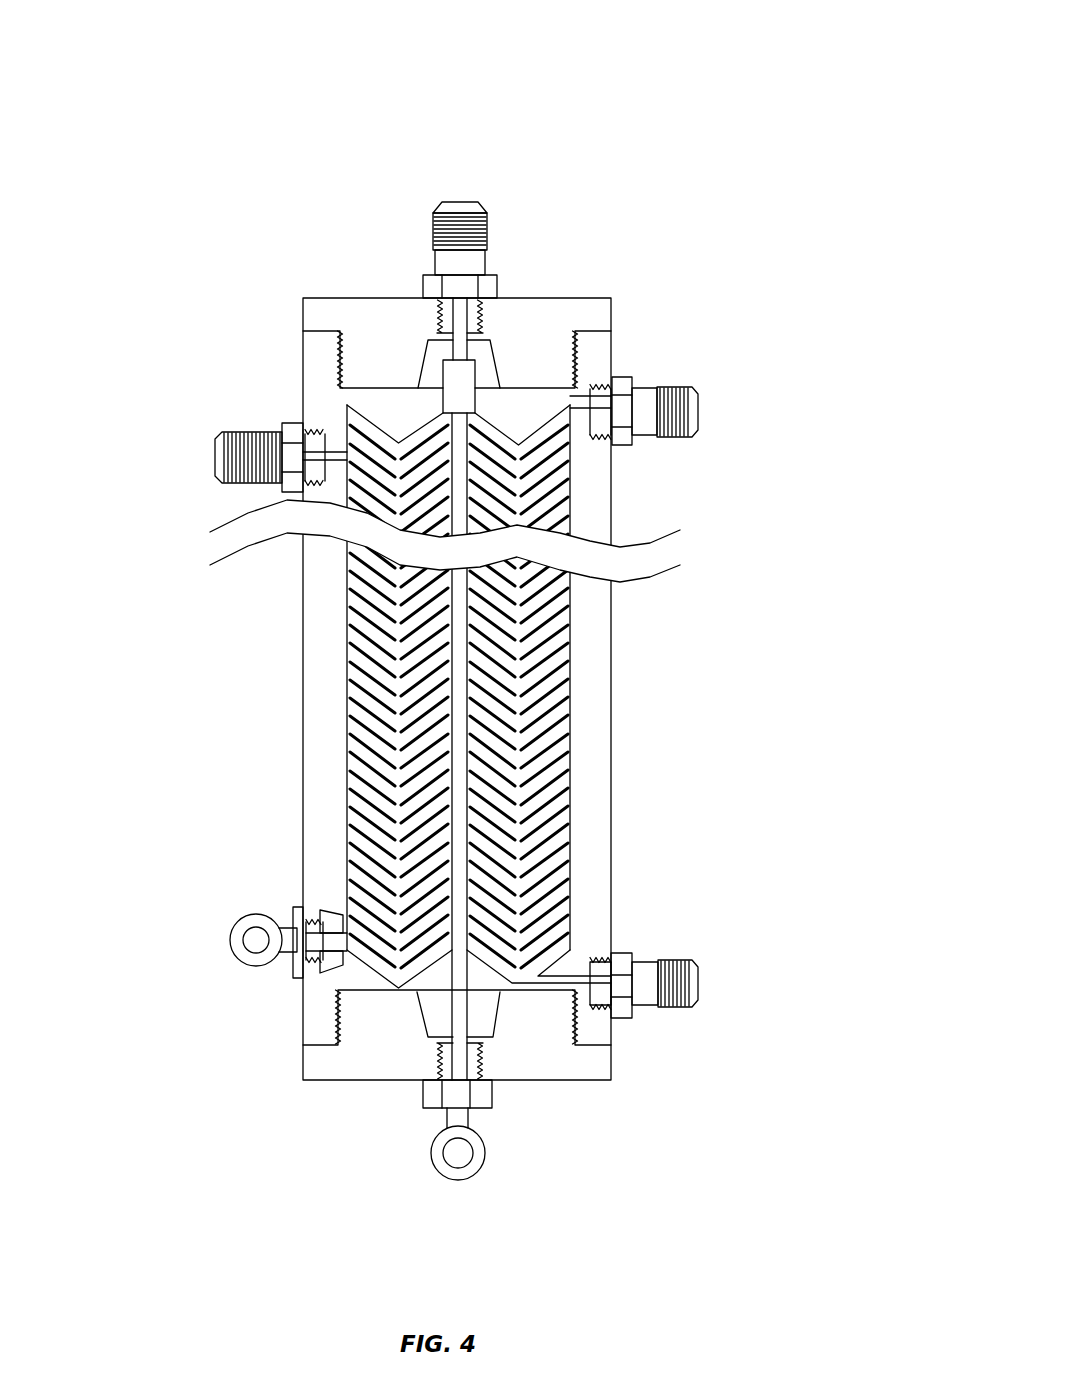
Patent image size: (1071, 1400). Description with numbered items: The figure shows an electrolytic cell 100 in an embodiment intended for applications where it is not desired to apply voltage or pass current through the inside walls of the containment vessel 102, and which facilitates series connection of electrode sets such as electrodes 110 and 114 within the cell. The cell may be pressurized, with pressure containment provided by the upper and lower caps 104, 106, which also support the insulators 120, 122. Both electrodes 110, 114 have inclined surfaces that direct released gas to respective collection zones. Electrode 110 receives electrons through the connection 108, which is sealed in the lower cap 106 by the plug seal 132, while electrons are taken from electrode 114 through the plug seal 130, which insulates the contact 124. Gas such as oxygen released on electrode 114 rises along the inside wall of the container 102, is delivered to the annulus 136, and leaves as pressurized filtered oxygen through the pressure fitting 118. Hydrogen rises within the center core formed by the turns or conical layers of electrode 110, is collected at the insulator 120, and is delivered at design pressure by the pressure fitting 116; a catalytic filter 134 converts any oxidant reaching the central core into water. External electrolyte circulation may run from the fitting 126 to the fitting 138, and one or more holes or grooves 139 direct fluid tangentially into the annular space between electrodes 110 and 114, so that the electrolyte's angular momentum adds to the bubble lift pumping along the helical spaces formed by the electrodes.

The electrolytic cell 100 is at (702, 50).
The containment vessel 102 is at (593, 500).
The upper cap 104 is at (567, 297).
The lower cap 106 is at (553, 1043).
The connection 108 is at (442, 1178).
The electrode 110 is at (417, 627).
The electrode 114 is at (363, 637).
The pressure fitting 116 is at (440, 202).
The pressure fitting 118 is at (693, 388).
The insulator 120 is at (392, 410).
The insulator 122 is at (380, 972).
The contact 124 is at (247, 913).
The fitting 126 is at (267, 432).
The plug seal 130 is at (330, 972).
The plug seal 132 is at (497, 1028).
The catalytic filter 134 is at (475, 380).
The annulus 136 is at (569, 412).
The fitting 138 is at (678, 958).
The holes or grooves 139 is at (577, 1042).